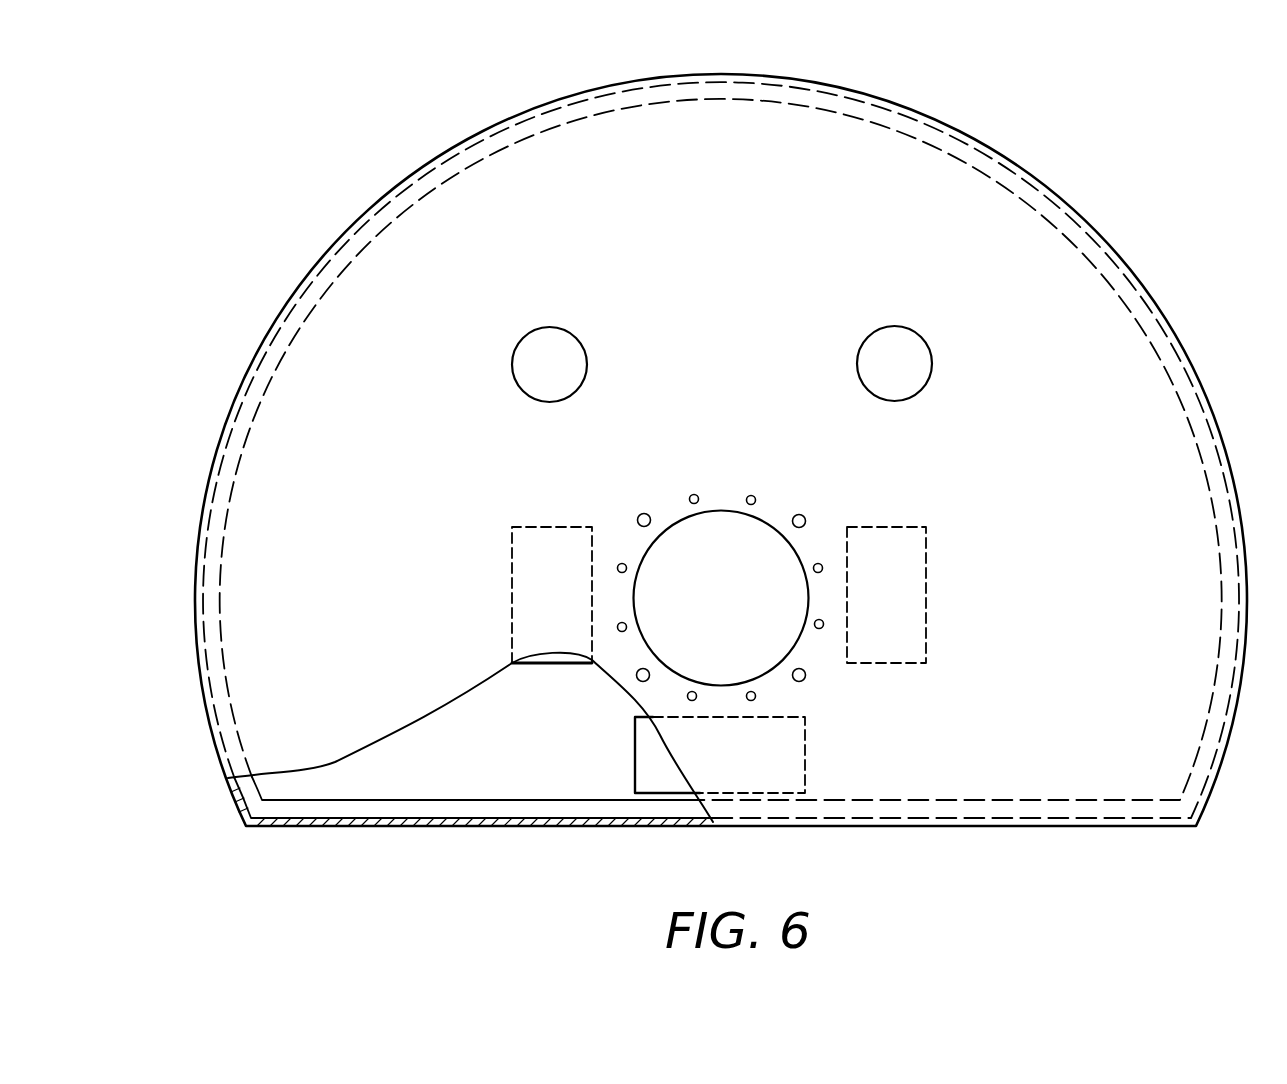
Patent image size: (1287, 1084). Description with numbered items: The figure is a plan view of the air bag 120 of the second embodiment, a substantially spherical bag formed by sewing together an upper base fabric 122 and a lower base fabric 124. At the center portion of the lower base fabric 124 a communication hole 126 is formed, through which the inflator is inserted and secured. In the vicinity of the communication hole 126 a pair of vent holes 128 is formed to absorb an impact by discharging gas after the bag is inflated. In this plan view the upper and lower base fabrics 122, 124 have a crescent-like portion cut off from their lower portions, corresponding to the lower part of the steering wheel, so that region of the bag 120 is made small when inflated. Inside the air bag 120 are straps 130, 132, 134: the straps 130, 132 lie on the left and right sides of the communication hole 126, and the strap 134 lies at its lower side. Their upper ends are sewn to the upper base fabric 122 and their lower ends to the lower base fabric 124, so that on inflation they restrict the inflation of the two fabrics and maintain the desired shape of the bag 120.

The air bag 120 is at (350, 160).
The upper base fabric 122 is at (393, 780).
The lower base fabric 124 is at (323, 720).
The communication hole 126 is at (668, 536).
The vent holes 128 is at (522, 345).
The strap 130 is at (560, 665).
The strap 132 is at (898, 664).
The strap 134 is at (633, 757).